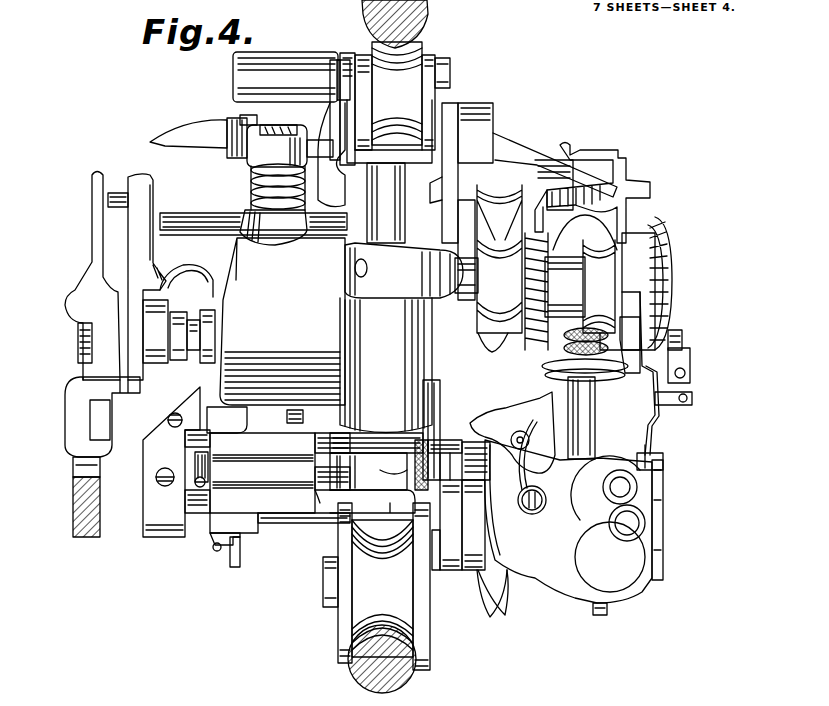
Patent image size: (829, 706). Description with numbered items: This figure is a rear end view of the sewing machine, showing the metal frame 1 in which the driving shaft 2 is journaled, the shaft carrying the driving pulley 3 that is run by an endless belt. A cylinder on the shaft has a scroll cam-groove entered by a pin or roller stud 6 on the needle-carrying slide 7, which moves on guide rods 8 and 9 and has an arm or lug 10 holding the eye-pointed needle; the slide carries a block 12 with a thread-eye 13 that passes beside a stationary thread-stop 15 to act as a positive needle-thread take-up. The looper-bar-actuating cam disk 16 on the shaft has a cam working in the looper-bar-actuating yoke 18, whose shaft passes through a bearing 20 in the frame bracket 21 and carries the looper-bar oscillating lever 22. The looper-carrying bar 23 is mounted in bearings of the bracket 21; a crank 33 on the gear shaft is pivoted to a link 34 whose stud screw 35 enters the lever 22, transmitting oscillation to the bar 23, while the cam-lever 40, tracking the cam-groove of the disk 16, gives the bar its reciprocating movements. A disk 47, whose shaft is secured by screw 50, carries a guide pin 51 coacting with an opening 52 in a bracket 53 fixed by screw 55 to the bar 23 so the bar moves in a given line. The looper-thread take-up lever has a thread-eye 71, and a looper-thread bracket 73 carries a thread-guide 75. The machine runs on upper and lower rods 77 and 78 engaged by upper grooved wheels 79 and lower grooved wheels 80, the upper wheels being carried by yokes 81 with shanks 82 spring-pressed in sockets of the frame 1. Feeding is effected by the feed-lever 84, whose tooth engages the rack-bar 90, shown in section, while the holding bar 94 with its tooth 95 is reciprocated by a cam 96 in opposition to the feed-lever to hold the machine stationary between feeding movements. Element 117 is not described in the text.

The metal frame 1 is at (282, 321).
The driving shaft 2 is at (192, 325).
The driving pulley 3 is at (505, 215).
The pin or roller stud 6 is at (303, 424).
The needle-carrying slide 7 is at (288, 524).
The guide rod 8 is at (346, 432).
The guide rod 9 is at (188, 500).
The arm or lug 10 is at (376, 545).
The block 12 is at (212, 545).
The thread-eye 13 is at (215, 555).
The stationary thread-stop 15 is at (236, 564).
The looper-bar-actuating cam disk 16 is at (672, 272).
The looper-bar-actuating yoke 18 is at (632, 236).
The bearing 20 is at (572, 418).
The frame bracket 21 is at (564, 590).
The looper-bar oscillating lever 22 is at (480, 416).
The looper-carrying bar 23 is at (640, 486).
The crank 33 is at (480, 572).
The link 34 is at (452, 570).
The stud screw 35 is at (415, 478).
The cam-lever 40 is at (676, 348).
The disk 47 is at (632, 582).
The screw 50 is at (598, 617).
The guide pin 51 is at (640, 523).
The opening 52 is at (648, 532).
The bracket 53 is at (600, 484).
The screw 55 is at (664, 458).
The thread-eye 71 is at (693, 399).
The looper-thread bracket 73 is at (642, 372).
The thread-guide 75 is at (688, 376).
The upper rod 77 is at (428, 22).
The lower rod 78 is at (398, 680).
The upper grooved wheel 79 is at (440, 68).
The lower grooved wheel 80 is at (360, 590).
The yoke 81 is at (448, 100).
The shank 82 is at (397, 203).
The feed-lever 84 is at (114, 190).
The rack-bar 90 is at (100, 500).
The holding bar 94 is at (148, 206).
The tooth 95 is at (72, 462).
The cam 96 is at (146, 331).
The disc 117 is at (545, 368).